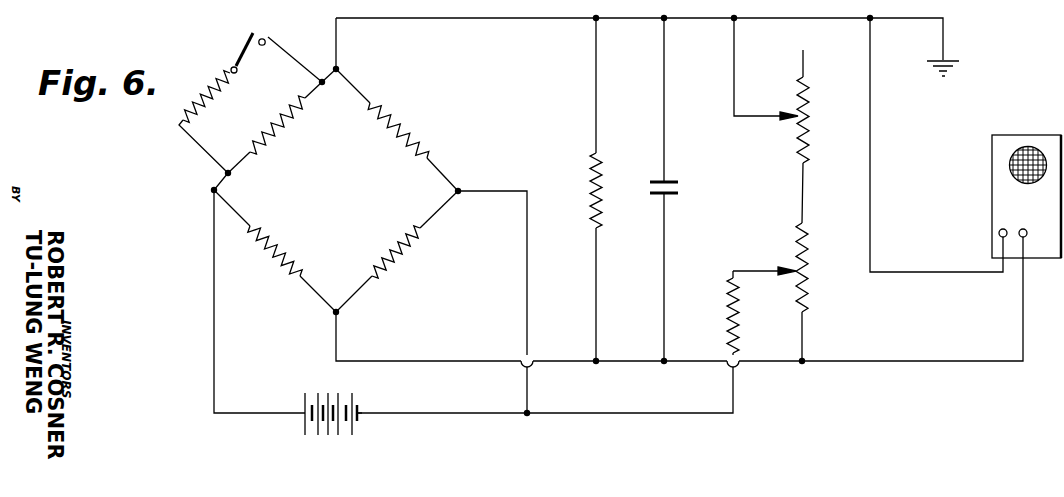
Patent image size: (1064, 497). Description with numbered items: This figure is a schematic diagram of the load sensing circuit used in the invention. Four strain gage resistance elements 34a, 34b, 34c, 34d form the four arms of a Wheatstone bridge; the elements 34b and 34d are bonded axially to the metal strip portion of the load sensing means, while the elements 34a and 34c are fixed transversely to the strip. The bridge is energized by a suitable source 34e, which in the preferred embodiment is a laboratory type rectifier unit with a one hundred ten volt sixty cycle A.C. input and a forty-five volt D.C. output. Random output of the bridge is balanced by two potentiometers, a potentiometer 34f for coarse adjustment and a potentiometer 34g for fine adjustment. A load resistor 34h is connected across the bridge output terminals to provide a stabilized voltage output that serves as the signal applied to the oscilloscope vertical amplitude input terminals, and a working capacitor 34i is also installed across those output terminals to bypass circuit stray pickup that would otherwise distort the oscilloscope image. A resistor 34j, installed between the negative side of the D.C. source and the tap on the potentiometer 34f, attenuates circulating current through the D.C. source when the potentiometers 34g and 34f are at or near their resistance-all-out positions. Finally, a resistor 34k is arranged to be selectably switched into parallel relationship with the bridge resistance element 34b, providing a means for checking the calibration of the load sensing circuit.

The strain gage resistance element 34a is at (392, 108).
The strain gage resistance element 34b is at (263, 144).
The strain gage resistance element 34c is at (254, 222).
The strain gage resistance element 34d is at (388, 268).
The source 34e is at (326, 395).
The potentiometer 34f is at (806, 293).
The potentiometer 34g is at (805, 133).
The load resistor 34h is at (594, 188).
The working capacitor 34i is at (666, 179).
The resistor 34j is at (736, 323).
The resistor 34k is at (202, 88).